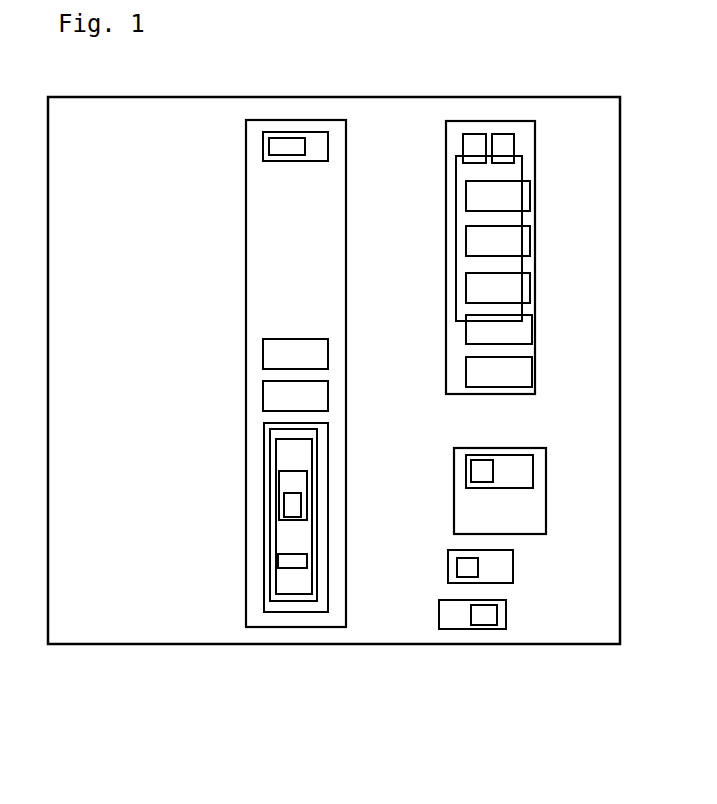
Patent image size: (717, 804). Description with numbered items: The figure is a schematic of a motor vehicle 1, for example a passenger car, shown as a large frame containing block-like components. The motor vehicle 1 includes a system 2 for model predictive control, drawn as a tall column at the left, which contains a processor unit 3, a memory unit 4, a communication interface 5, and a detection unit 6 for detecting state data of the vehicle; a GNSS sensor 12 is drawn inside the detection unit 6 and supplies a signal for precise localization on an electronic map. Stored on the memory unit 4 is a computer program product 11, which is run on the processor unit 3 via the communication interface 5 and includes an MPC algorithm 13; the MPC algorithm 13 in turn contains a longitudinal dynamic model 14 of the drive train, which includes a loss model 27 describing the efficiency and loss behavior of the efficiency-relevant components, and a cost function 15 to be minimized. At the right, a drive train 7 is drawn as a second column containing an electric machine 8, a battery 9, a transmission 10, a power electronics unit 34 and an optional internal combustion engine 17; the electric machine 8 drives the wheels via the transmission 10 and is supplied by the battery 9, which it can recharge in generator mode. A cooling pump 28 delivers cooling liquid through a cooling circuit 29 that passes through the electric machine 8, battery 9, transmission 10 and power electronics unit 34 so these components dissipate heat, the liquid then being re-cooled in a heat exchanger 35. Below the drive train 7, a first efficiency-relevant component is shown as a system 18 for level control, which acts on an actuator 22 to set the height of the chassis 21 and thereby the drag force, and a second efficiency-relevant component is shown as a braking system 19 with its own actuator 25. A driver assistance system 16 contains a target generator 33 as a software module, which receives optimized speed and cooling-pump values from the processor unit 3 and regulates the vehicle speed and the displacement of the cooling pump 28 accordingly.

The motor vehicle 1 is at (597, 493).
The system 2 is at (252, 349).
The processor unit 3 is at (286, 351).
The memory unit 4 is at (323, 435).
The communication interface 5 is at (287, 392).
The detection unit 6 is at (312, 144).
The drive train 7 is at (527, 265).
The electric machine 8 is at (483, 197).
The battery 9 is at (483, 239).
The transmission 10 is at (483, 285).
The computer program product 11 is at (287, 434).
The GNSS sensor 12 is at (287, 144).
The MPC algorithm 13 is at (284, 462).
The longitudinal dynamic model 14 is at (300, 479).
The cost function 15 is at (288, 562).
The driver assistance system 16 is at (458, 613).
The internal combustion engine 17 is at (495, 369).
The system for the level control 18 is at (509, 471).
The braking system 19 is at (490, 567).
The chassis 21 is at (513, 520).
The actuator 22 is at (483, 473).
The actuator 25 is at (467, 568).
The loss model 27 is at (290, 506).
The cooling pump 28 is at (503, 143).
The cooling circuit 29 is at (522, 173).
The target generator 33 is at (486, 613).
The power electronics unit 34 is at (495, 328).
The heat exchanger 35 is at (473, 145).